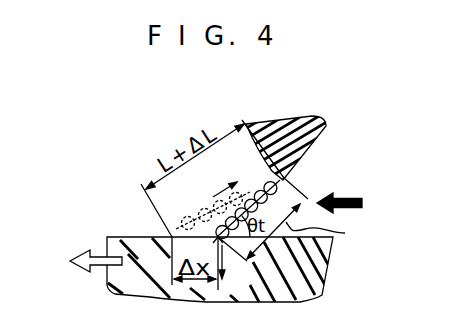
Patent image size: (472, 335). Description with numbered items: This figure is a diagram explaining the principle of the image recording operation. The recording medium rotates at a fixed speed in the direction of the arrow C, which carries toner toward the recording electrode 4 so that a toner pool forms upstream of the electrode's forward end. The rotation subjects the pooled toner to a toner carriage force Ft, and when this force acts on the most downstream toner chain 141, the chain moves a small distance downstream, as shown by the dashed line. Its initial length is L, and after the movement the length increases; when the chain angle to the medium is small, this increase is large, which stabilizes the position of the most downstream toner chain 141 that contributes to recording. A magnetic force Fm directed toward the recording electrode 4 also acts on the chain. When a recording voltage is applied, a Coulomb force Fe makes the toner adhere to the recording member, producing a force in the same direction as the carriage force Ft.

The recording electrode 4 is at (321, 141).
The most downstream toner chain 141 is at (290, 181).
The initial length of the toner chain L is at (324, 233).
The rotation direction arrow C is at (88, 261).
The toner carriage force Ft is at (353, 199).
The Coulomb force Fe is at (234, 270).
The magnetic force Fm is at (228, 175).